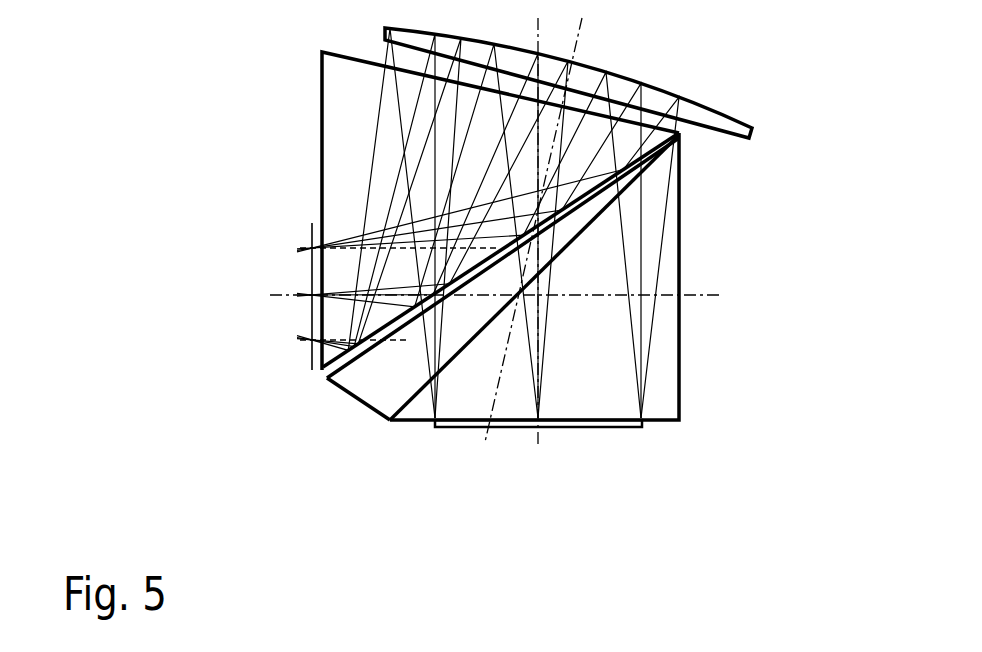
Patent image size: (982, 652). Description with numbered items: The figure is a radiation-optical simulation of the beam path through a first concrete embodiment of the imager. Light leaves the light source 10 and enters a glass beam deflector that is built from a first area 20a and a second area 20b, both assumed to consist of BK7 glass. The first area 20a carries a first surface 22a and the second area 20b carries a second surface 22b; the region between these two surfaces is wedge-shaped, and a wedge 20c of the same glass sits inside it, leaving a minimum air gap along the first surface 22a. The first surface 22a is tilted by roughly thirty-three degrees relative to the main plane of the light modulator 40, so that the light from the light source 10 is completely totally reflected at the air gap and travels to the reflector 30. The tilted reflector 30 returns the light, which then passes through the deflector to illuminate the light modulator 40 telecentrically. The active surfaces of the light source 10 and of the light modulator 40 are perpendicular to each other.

The light source 10 is at (310, 280).
The first area 20a is at (348, 122).
The second area 20b is at (668, 372).
The wedge 20c is at (388, 382).
The first surface 22a is at (338, 372).
The second surface 22b is at (418, 394).
The reflector 30 is at (702, 117).
The light modulator 40 is at (575, 428).